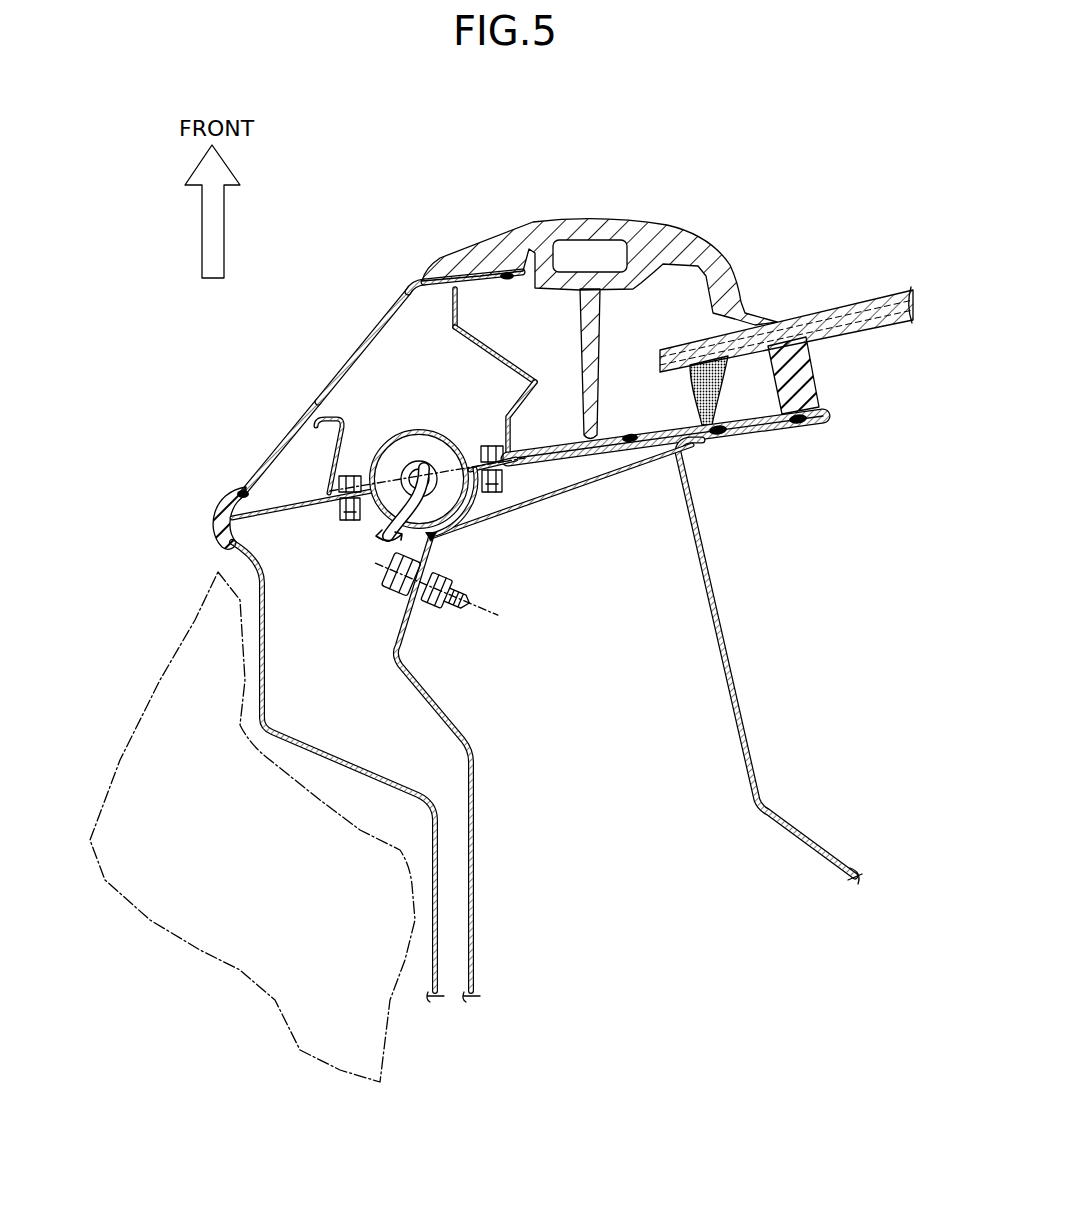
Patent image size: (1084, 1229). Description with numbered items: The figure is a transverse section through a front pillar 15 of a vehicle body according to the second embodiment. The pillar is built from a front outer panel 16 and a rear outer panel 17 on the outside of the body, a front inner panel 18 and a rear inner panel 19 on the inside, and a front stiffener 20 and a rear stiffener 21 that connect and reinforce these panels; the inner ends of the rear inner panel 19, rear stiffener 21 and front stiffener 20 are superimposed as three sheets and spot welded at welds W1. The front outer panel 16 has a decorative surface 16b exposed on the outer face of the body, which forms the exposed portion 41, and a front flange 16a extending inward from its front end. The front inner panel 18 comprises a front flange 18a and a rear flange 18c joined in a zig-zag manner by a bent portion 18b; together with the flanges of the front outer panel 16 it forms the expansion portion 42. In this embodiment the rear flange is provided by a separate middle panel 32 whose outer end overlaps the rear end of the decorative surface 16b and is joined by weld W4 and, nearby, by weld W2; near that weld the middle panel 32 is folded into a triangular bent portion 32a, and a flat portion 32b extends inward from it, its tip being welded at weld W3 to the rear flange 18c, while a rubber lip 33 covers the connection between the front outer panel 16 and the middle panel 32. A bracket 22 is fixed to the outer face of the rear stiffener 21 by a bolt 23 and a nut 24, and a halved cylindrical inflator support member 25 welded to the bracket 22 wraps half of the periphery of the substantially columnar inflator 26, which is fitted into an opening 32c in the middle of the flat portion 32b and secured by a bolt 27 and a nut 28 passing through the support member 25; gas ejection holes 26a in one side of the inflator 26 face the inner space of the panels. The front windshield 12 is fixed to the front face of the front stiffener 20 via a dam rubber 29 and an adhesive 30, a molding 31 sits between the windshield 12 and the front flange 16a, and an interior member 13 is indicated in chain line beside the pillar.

The front windshield 12 is at (843, 308).
The instrument panel 13 is at (155, 690).
The front pillar 15 is at (328, 325).
The front outer panel 16 is at (366, 328).
The front flange 16a is at (476, 295).
The decorative surface 16b is at (340, 367).
The rear outer panel 17 is at (344, 759).
The front inner panel 18 is at (515, 356).
The front flange 18a is at (476, 296).
The bent portion 18b is at (490, 357).
The rear flange 18c is at (561, 437).
The rear inner panel 19 is at (716, 589).
The front stiffener 20 is at (730, 423).
The rear stiffener 21 is at (476, 748).
The bracket 22 is at (446, 520).
The bolt 23 is at (395, 598).
The nut 24 is at (428, 608).
The inflator support member 25 is at (484, 508).
The inflator 26 is at (382, 436).
The gas ejection hole 26a is at (423, 428).
The bolt 27 is at (346, 476).
The nut 28 is at (338, 515).
The dam rubber 29 is at (808, 368).
The adhesive 30 is at (700, 395).
The molding 31 is at (638, 236).
The middle panel 32 is at (328, 416).
The bent portion 32a is at (328, 453).
The flat portion 32b is at (511, 437).
The opening 32c is at (450, 437).
The rubber lip 33 is at (215, 512).
The exposed portion 41 is at (316, 378).
The expansion portion 42 is at (553, 359).
The weld W1 is at (720, 437).
The weld point W2 is at (507, 270).
The weld W3 is at (631, 433).
The weld W4 is at (242, 486).